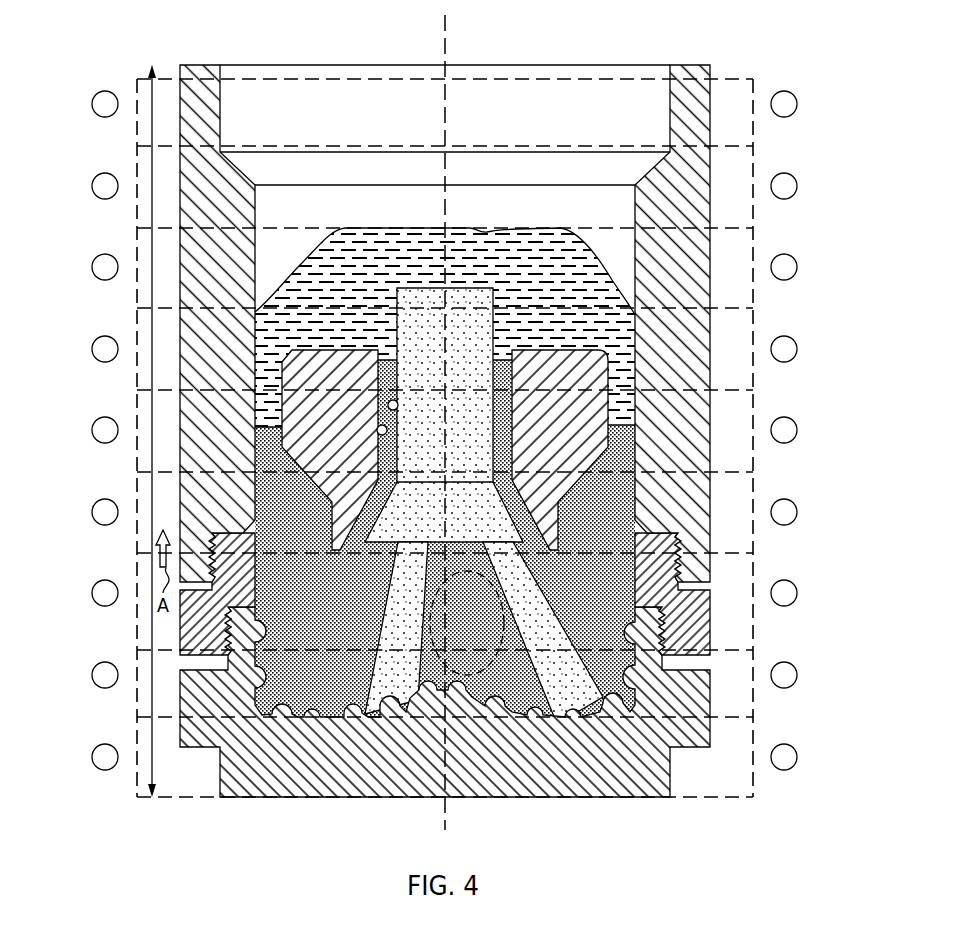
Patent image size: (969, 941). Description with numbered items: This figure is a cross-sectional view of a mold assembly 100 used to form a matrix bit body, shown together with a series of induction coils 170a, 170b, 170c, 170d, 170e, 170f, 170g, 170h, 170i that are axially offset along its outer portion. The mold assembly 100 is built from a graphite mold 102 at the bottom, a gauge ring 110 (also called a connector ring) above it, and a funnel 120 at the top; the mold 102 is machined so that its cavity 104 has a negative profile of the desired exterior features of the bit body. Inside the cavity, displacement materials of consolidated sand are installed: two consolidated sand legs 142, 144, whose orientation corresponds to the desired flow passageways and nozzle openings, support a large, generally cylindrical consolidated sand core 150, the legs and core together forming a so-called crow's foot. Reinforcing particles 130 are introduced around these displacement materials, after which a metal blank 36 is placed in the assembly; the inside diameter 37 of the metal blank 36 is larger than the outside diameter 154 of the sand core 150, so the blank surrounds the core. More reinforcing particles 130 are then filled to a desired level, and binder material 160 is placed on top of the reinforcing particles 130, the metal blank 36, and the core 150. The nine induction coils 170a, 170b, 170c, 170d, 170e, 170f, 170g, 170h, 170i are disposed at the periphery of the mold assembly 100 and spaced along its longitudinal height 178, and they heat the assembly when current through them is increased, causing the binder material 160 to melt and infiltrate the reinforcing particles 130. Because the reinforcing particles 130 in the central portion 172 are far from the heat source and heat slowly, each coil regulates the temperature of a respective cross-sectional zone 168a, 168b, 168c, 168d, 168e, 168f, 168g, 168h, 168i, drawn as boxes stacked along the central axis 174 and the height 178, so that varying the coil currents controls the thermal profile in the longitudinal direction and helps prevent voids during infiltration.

The mold assembly 100 is at (559, 821).
The mold 102 is at (721, 723).
The cavity 104 is at (266, 260).
The gauge ring 110 is at (717, 628).
The funnel 120 is at (710, 290).
The reinforcing particles 130 is at (301, 647).
The metal blank 36 is at (548, 421).
The inside diameter 37 is at (377, 430).
The consolidated sand leg 142 is at (379, 687).
The consolidated sand leg 144 is at (555, 694).
The consolidated sand core 150 is at (431, 351).
The outside diameter 154 is at (398, 405).
The binder material 160 is at (494, 229).
The cross-sectional zone 168a is at (137, 771).
The cross-sectional zone 168b is at (137, 689).
The cross-sectional zone 168c is at (137, 607).
The cross-sectional zone 168d is at (137, 526).
The cross-sectional zone 168e is at (137, 444).
The cross-sectional zone 168f is at (137, 363).
The cross-sectional zone 168g is at (137, 281).
The cross-sectional zone 168h is at (137, 200).
The cross-sectional zone 168i is at (137, 118).
The induction coil 170a is at (104, 770).
The induction coil 170b is at (104, 688).
The induction coil 170c is at (104, 606).
The induction coil 170d is at (104, 525).
The induction coil 170e is at (104, 443).
The induction coil 170f is at (104, 362).
The induction coil 170g is at (104, 280).
The induction coil 170h is at (104, 199).
The induction coil 170i is at (104, 117).
The central portion 172 is at (431, 679).
The central axis 174 is at (445, 40).
The longitudinal height 178 is at (152, 778).